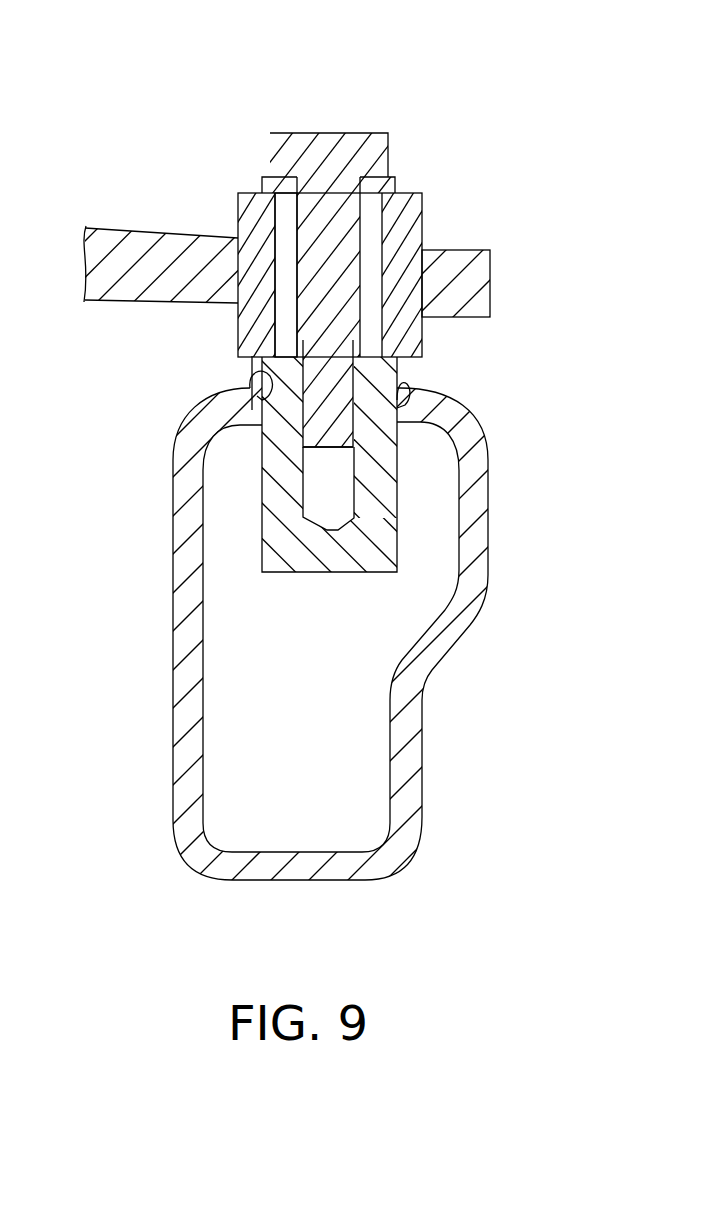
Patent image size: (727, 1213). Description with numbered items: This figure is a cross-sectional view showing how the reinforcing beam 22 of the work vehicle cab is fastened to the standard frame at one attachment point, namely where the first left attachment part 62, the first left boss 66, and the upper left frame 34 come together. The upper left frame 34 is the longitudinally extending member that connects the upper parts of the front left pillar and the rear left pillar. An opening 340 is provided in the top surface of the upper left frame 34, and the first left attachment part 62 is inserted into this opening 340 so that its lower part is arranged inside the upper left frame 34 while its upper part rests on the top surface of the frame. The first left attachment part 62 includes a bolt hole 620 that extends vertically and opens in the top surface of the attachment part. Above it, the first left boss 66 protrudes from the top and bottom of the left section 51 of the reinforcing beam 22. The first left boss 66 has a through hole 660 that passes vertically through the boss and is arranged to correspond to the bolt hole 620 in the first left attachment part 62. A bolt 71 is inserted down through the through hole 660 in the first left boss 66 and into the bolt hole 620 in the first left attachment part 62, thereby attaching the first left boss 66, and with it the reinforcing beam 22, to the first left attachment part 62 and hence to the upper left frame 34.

The reinforcing beam 22 is at (120, 213).
The left section 51 is at (197, 233).
The through hole 660 is at (277, 227).
The bolt 71 is at (343, 143).
The first left boss 66 is at (407, 220).
The opening 340 is at (250, 377).
The first left attachment part 62 is at (270, 470).
The bolt hole 620 is at (358, 463).
The upper left frame 34 is at (183, 572).